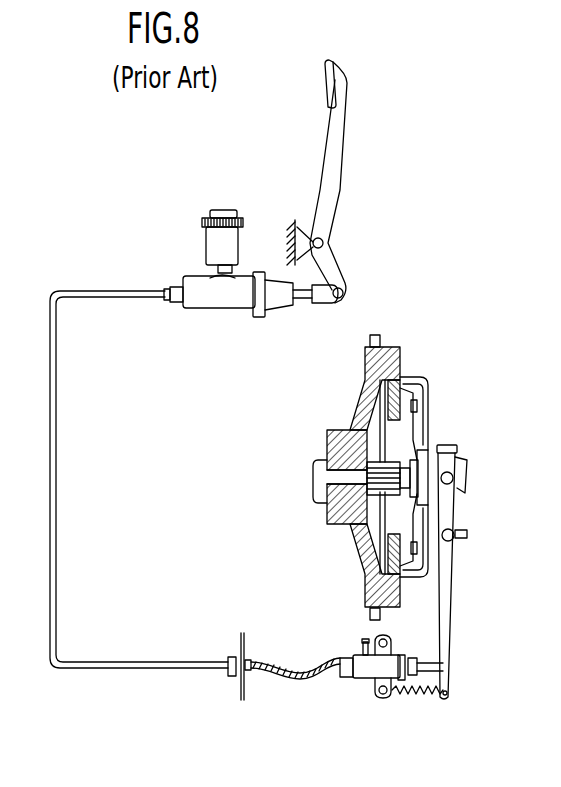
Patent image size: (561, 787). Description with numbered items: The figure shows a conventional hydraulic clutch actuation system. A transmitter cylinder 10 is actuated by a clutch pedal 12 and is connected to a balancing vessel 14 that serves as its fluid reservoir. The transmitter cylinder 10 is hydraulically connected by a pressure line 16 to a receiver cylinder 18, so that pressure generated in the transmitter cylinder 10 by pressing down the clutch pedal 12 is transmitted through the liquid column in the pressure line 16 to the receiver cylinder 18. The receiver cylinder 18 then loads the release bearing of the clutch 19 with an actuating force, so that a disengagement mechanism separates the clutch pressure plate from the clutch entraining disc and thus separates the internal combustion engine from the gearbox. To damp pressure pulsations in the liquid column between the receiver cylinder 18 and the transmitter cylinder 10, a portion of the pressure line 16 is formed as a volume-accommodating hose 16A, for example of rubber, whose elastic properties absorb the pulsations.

The transmitter cylinder 10 is at (193, 288).
The clutch pedal 12 is at (338, 146).
The balancing vessel 14 is at (230, 238).
The pressure line 16 is at (50, 470).
The volume-accommodating hose 16A is at (302, 673).
The receiver cylinder 18 is at (383, 668).
The clutch 19 is at (362, 403).